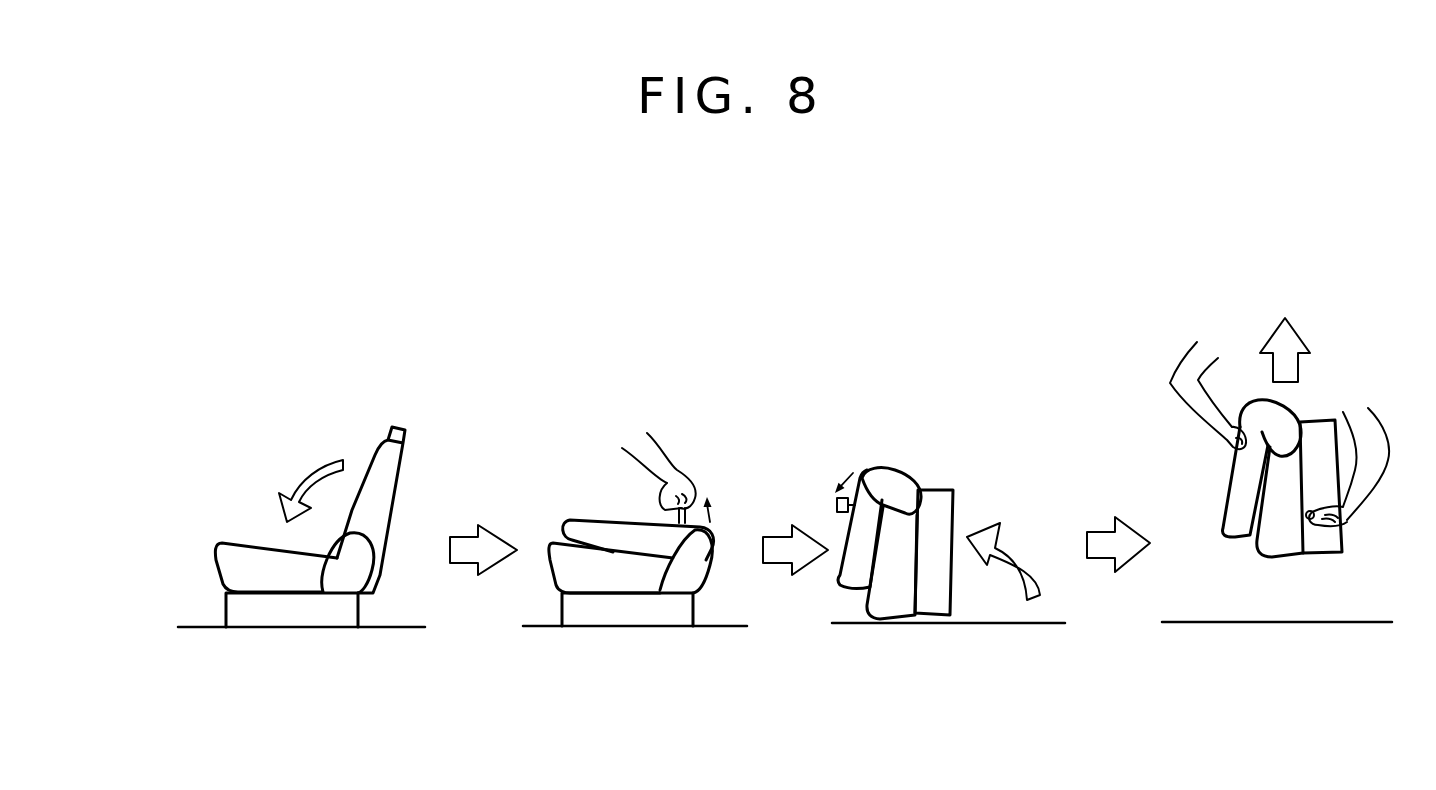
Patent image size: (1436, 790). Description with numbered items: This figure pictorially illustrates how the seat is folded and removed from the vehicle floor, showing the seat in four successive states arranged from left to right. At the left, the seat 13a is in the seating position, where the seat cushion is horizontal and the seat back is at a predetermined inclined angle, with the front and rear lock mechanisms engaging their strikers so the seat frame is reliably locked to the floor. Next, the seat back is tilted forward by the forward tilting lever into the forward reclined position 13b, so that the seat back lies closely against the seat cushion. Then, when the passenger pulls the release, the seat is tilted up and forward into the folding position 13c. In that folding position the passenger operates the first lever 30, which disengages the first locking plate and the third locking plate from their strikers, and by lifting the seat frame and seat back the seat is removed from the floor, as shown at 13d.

The seat in seating position 13a is at (301, 509).
The seat in forward reclined position 13b is at (635, 505).
The seat in folding position 13c is at (918, 511).
The seat removed from floor 13d is at (1296, 508).
The first lever 30 is at (1310, 519).